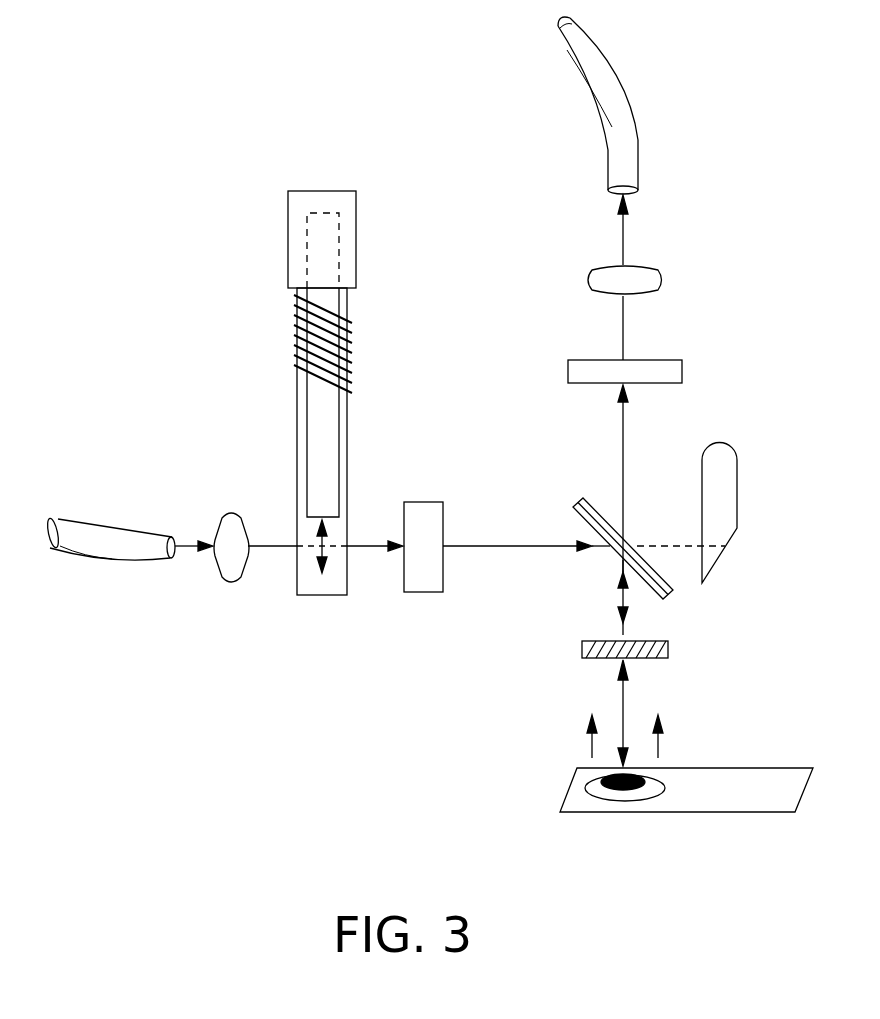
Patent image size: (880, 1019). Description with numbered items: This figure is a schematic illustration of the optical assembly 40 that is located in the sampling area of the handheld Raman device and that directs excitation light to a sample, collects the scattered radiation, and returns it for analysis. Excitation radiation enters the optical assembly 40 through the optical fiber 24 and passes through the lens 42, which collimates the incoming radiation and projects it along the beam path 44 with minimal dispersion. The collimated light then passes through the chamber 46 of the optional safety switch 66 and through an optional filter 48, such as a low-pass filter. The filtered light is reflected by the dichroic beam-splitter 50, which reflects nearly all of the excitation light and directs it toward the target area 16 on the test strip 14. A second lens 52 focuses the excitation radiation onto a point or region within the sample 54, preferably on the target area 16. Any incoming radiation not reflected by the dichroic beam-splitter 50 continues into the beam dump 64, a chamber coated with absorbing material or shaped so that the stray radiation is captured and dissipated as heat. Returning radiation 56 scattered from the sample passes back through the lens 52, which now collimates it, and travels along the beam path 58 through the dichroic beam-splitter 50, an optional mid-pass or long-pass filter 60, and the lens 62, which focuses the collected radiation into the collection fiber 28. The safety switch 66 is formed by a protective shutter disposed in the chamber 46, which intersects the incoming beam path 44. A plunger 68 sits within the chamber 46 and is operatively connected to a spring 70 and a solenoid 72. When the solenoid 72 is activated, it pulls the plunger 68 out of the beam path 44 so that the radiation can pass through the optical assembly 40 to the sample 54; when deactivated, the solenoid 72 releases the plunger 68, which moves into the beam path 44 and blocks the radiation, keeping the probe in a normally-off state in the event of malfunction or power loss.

The test strip 14 is at (780, 785).
The target area 16 is at (655, 792).
The optical fiber 24 is at (110, 532).
The collection fiber 28 is at (640, 152).
The optical assembly 40 is at (111, 670).
The lens 42 is at (230, 584).
The beam path 44 is at (500, 546).
The chamber 46 is at (325, 595).
The filter 48 is at (425, 502).
The dichroic beam-splitter 50 is at (653, 597).
The second lens 52 is at (582, 648).
The sample 54 is at (605, 784).
The returning radiation 56 is at (590, 745).
The beam path 58 is at (623, 447).
The filter 60 is at (682, 371).
The lens 62 is at (662, 282).
The beam dump 64 is at (737, 487).
The safety switch 66 is at (236, 339).
The plunger 68 is at (307, 405).
The spring 70 is at (352, 315).
The solenoid 72 is at (298, 205).